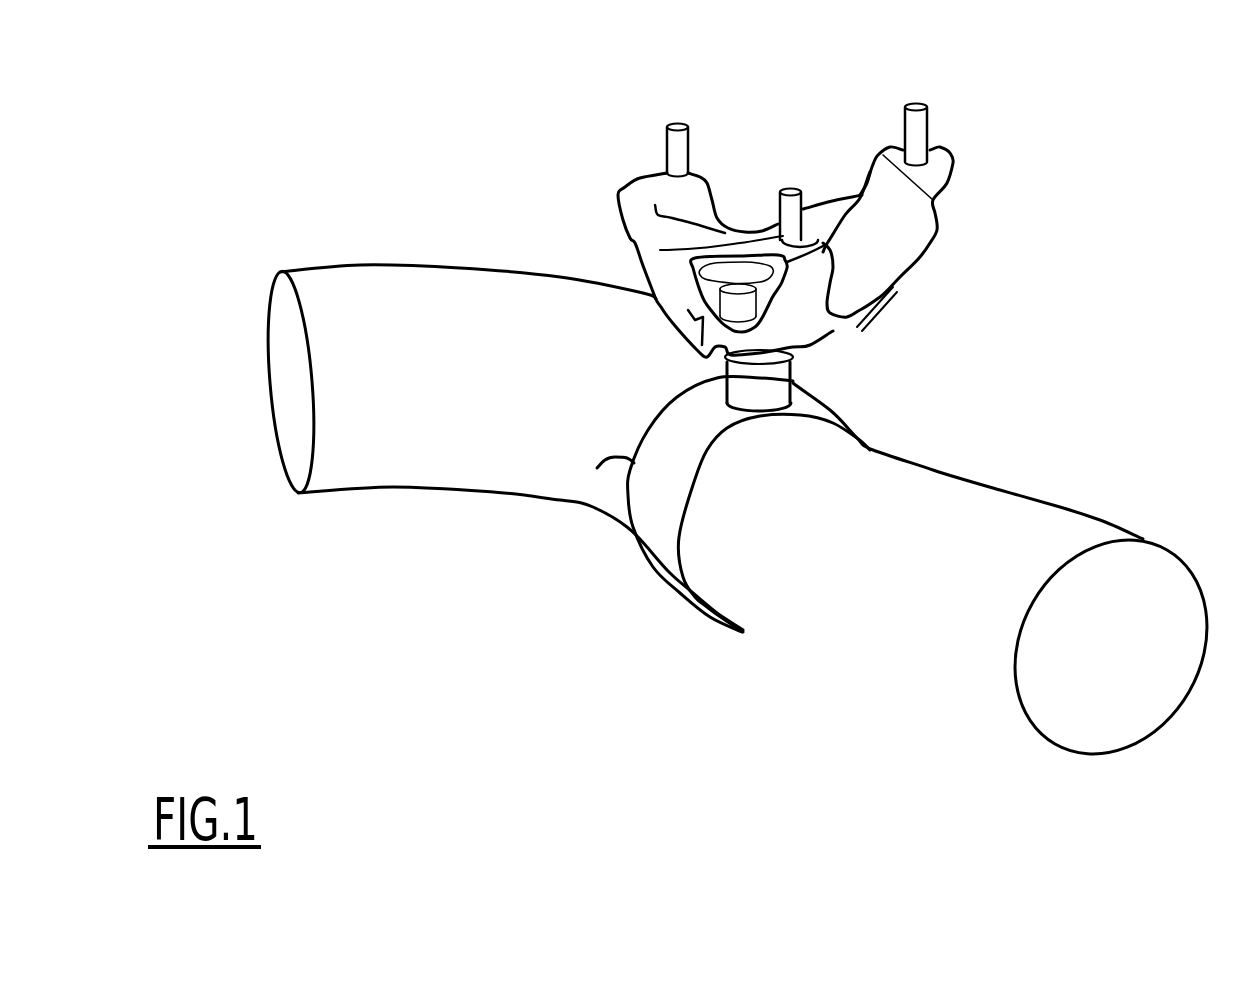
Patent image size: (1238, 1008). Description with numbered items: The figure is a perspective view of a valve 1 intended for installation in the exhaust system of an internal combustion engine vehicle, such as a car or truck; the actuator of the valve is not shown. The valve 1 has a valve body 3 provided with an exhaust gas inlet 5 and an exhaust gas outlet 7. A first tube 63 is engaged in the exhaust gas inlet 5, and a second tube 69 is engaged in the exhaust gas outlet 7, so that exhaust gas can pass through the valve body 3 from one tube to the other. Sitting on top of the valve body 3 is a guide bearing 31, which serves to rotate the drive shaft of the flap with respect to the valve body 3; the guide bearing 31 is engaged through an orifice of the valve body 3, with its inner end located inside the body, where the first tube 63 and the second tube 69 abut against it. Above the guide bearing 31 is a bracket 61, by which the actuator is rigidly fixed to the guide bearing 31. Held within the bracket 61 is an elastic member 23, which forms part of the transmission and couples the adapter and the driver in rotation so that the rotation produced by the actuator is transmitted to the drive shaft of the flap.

The valve 1 is at (165, 132).
The valve body 3 is at (657, 518).
The exhaust gas inlet 5 is at (685, 498).
The exhaust gas outlet 7 is at (597, 468).
The elastic member 23 is at (728, 277).
The guide bearing 31 is at (767, 388).
The bracket 61 is at (825, 325).
The first tube 63 is at (1030, 527).
The second tube 69 is at (396, 325).